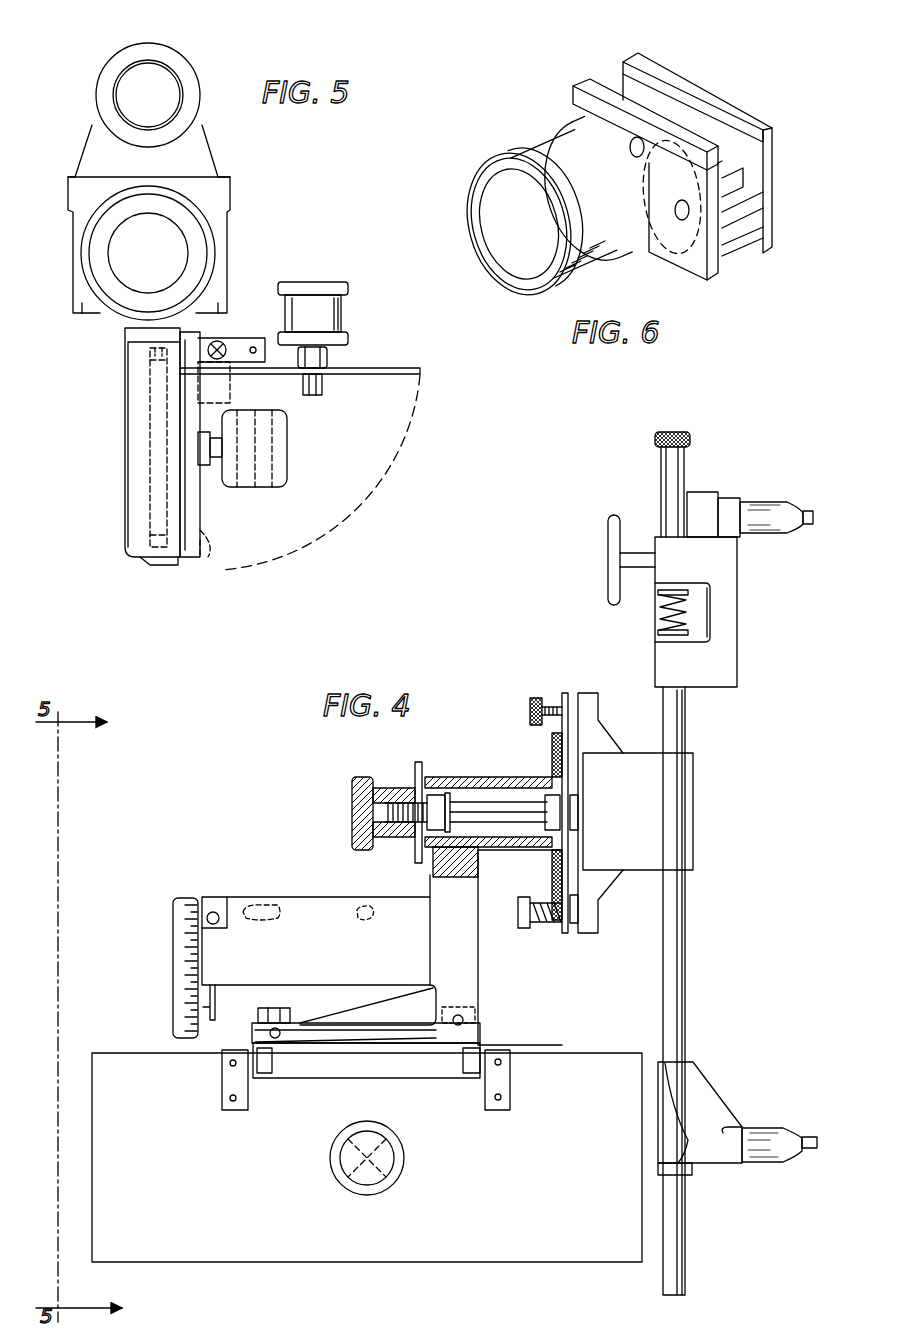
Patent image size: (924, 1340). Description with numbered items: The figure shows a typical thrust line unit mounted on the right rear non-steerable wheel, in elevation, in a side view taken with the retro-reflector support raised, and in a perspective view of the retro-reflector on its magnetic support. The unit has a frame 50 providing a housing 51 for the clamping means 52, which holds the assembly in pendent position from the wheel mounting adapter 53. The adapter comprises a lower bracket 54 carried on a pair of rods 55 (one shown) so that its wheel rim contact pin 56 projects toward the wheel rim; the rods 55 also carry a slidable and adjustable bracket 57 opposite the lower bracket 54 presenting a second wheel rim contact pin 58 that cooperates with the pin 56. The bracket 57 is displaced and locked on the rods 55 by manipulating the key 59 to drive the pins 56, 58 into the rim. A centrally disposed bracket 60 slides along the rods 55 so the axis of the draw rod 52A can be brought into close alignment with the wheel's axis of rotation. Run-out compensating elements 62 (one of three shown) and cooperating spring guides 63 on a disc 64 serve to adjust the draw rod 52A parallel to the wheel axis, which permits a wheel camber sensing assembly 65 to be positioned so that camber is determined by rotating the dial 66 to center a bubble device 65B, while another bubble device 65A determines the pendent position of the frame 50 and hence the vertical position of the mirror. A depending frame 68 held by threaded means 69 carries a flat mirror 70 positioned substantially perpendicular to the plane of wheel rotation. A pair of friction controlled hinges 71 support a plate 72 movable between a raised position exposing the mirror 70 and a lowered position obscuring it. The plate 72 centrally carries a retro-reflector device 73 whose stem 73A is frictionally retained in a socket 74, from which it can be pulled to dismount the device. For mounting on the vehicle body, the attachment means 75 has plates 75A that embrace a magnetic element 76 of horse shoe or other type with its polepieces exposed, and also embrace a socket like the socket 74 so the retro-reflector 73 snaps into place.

In FIG. 4, the frame 50 is at (478, 980).
In FIG. 4, the housing 51 is at (448, 776).
In FIG. 5, the clamping means 52 is at (128, 92).
In FIG. 4, the clamping means 52 is at (362, 797).
In FIG. 4, the draw rod 52A is at (502, 800).
In FIG. 4, the wheel mounting adapter 53 is at (714, 743).
In FIG. 4, the lower bracket 54 is at (695, 1108).
In FIG. 4, the rods 55 is at (673, 944).
In FIG. 4, the wheel rim contact pin 56 is at (822, 1113).
In FIG. 4, the slidable and adjustable bracket 57 is at (720, 612).
In FIG. 4, the wheel rim contact pin 58 is at (808, 515).
In FIG. 4, the key 59 is at (610, 532).
In FIG. 4, the centrally disposed bracket 60 is at (680, 831).
In FIG. 4, the run-out compensating elements 62 is at (533, 700).
In FIG. 4, the spring guides 63 is at (545, 897).
In FIG. 4, the disc 64 is at (562, 745).
In FIG. 5, the wheel camber sensing assembly 65 is at (215, 184).
In FIG. 4, the wheel camber sensing assembly 65 is at (306, 962).
In FIG. 4, the bubble device 65A is at (380, 876).
In FIG. 4, the bubble device 65B is at (282, 905).
In FIG. 5, the dial 66 is at (92, 272).
In FIG. 4, the dial 66 is at (178, 950).
In FIG. 5, the depending frame 68 is at (133, 492).
In FIG. 4, the threaded means 69 is at (290, 1010).
In FIG. 5, the flat mirror 70 is at (150, 420).
In FIG. 5, the friction controlled hinges 71 is at (262, 336).
In FIG. 4, the friction controlled hinges 71 is at (226, 1075).
In FIG. 5, the plate 72 is at (410, 382).
In FIG. 4, the plate 72 is at (258, 1190).
In FIG. 5, the retro-reflector device 73 is at (335, 308).
In FIG. 6, the retro-reflector device 73 is at (600, 258).
In FIG. 4, the retro-reflector device 73 is at (404, 1160).
In FIG. 5, the stem 73A is at (320, 395).
In FIG. 5, the socket 74 is at (330, 365).
In FIG. 6, the attachment means 75 is at (684, 283).
In FIG. 6, the plates 75A is at (657, 62).
In FIG. 6, the magnetic element 76 is at (725, 140).